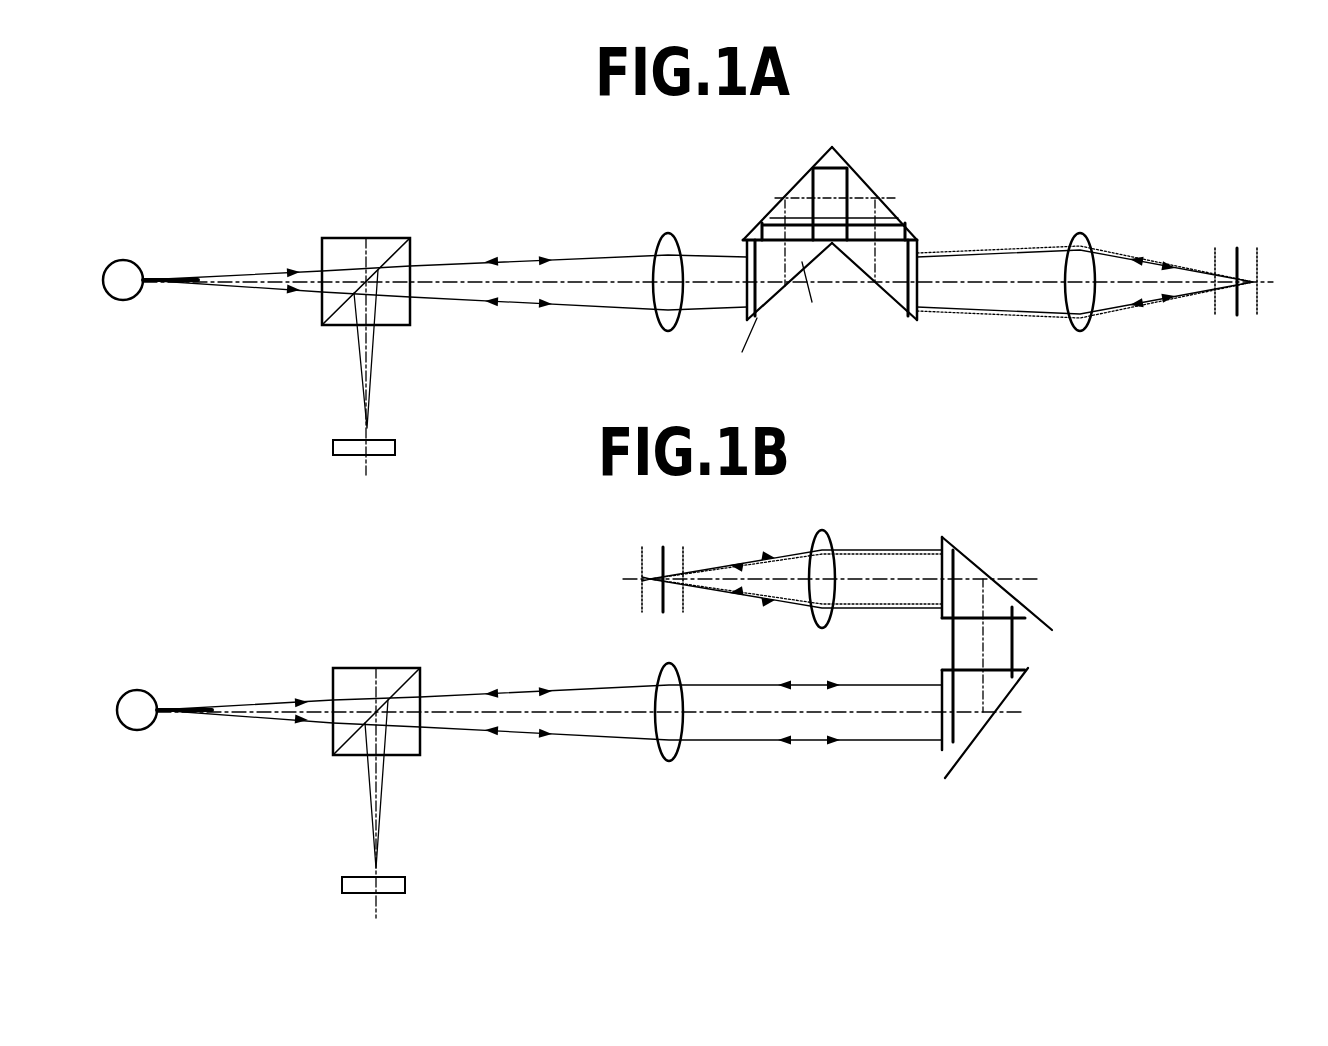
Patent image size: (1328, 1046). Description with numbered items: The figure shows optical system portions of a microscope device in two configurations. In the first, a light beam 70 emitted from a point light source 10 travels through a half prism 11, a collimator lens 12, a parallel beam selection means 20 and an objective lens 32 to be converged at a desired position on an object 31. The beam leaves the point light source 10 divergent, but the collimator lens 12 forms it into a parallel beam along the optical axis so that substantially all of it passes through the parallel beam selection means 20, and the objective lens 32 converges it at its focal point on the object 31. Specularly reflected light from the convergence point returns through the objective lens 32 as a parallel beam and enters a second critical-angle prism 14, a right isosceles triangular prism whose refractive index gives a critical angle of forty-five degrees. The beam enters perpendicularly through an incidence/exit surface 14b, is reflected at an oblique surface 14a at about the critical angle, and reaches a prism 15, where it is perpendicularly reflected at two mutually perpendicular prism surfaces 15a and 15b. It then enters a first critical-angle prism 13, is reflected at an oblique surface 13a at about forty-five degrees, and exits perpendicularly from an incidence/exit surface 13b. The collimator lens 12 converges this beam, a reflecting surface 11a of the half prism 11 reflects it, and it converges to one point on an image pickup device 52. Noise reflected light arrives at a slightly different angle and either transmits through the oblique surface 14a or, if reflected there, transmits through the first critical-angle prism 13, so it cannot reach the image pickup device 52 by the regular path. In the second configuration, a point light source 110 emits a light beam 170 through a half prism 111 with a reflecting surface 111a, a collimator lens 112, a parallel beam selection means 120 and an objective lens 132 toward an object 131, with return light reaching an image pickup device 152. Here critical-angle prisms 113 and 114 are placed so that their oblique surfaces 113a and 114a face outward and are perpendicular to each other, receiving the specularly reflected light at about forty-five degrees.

In FIG. 1A, the point light source 10 is at (127, 259).
In FIG. 1A, the half prism 11 is at (388, 325).
In FIG. 1A, the reflecting surface 11a is at (406, 242).
In FIG. 1A, the light beam 70 is at (246, 292).
In FIG. 1A, the image pickup device 52 is at (393, 444).
In FIG. 1A, the collimator lens 12 is at (656, 323).
In FIG. 1A, the first critical-angle prism 13 is at (764, 297).
In FIG. 1A, the oblique surface 13a is at (772, 303).
In FIG. 1A, the incidence/exit surface 13b is at (745, 305).
In FIG. 1A, the second critical-angle prism 14 is at (899, 282).
In FIG. 1A, the oblique surface 14a is at (848, 263).
In FIG. 1A, the incidence/exit surface 14b is at (918, 245).
In FIG. 1A, the prism 15 is at (844, 178).
In FIG. 1A, the prism surface 15a is at (885, 200).
In FIG. 1A, the prism surface 15b is at (800, 177).
In FIG. 1A, the parallel beam selection means 20 is at (837, 255).
In FIG. 1A, the object 31 is at (1253, 232).
In FIG. 1A, the objective lens 32 is at (1088, 240).
In FIG. 1B, the point light source 110 is at (136, 690).
In FIG. 1B, the half prism 111 is at (404, 764).
In FIG. 1B, the reflecting surface 111a is at (413, 670).
In FIG. 1B, the light beam 170 is at (250, 722).
In FIG. 1B, the image pickup device 152 is at (406, 890).
In FIG. 1B, the collimator lens 112 is at (660, 760).
In FIG. 1B, the critical-angle prism 113 is at (1013, 729).
In FIG. 1B, the oblique surface 113a is at (993, 720).
In FIG. 1B, the critical-angle prism 114 is at (1021, 583).
In FIG. 1B, the oblique surface 114a is at (982, 572).
In FIG. 1B, the parallel beam selection means 120 is at (1035, 664).
In FIG. 1B, the object 131 is at (668, 528).
In FIG. 1B, the objective lens 132 is at (835, 537).